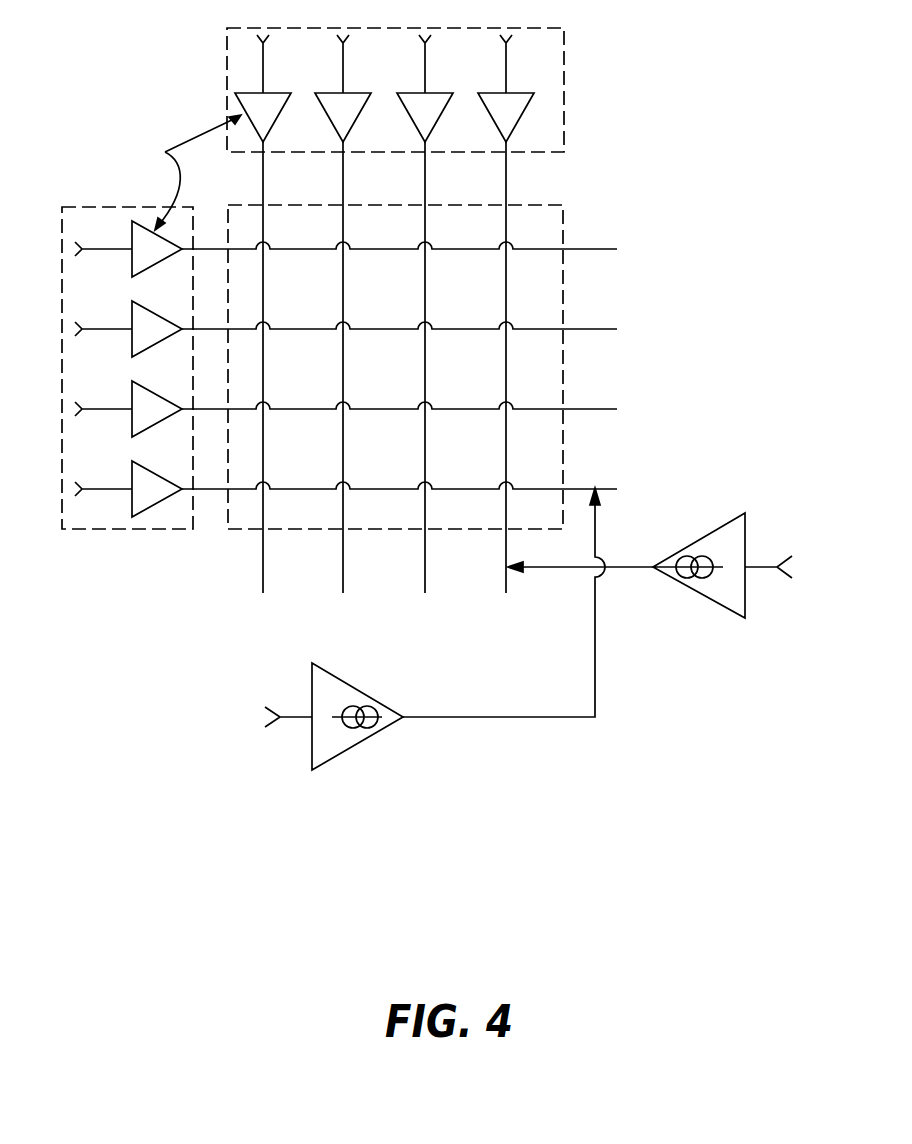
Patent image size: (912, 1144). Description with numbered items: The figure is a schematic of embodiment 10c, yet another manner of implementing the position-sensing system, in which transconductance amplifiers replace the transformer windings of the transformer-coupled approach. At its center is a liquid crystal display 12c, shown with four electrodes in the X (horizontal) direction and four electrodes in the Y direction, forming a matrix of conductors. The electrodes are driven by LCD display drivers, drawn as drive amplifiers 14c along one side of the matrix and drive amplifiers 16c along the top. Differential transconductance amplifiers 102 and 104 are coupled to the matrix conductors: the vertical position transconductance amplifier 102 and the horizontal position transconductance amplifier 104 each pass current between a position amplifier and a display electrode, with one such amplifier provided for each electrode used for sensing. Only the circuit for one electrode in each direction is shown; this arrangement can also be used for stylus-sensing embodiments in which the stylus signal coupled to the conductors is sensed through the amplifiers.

The embodiment 10c is at (711, 69).
The liquid crystal display 12c is at (560, 234).
The drive amplifiers 14c is at (128, 530).
The drive amplifiers 16c is at (563, 85).
The differential transconductance amplifier 102 is at (349, 686).
The differential transconductance amplifier 104 is at (690, 542).